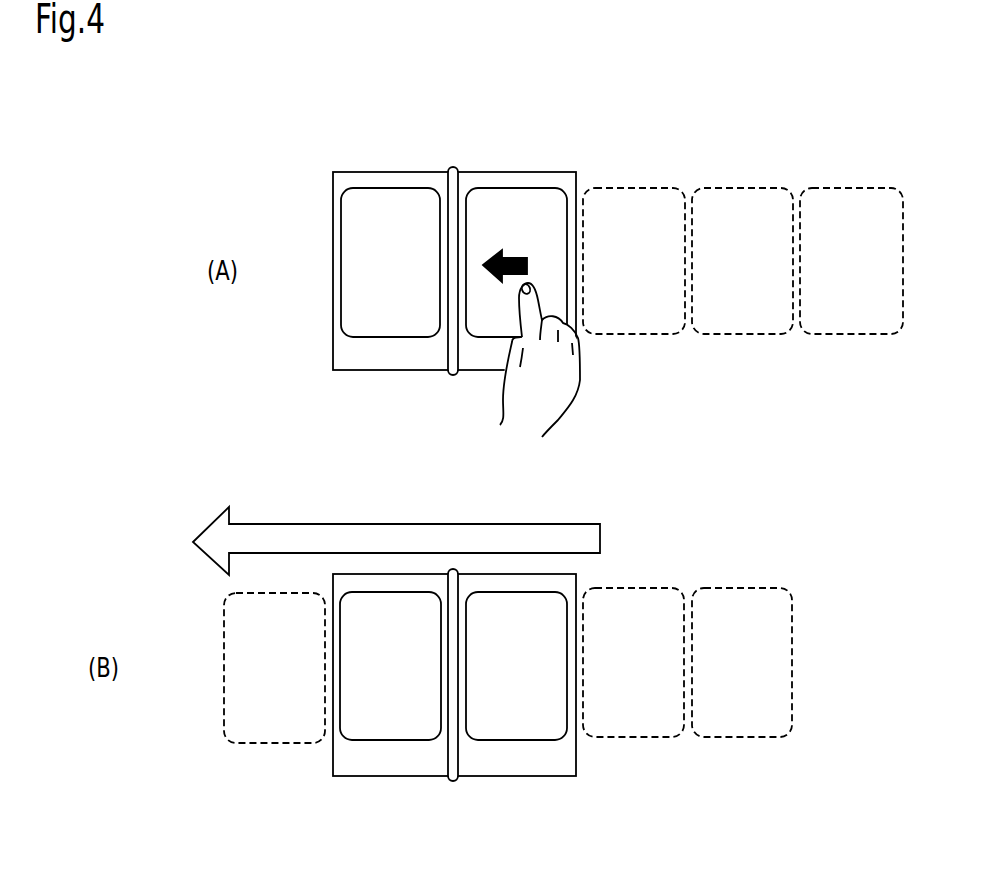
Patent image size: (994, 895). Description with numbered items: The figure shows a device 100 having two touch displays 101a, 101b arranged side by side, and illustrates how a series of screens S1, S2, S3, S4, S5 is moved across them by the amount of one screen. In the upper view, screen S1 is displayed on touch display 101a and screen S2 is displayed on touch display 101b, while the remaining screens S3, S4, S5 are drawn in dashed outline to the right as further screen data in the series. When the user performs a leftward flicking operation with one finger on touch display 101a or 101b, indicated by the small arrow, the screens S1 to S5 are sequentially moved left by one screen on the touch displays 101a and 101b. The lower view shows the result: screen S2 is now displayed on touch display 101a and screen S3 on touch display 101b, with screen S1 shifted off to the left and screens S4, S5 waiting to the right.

The mobile terminal 100 is at (361, 124).
The touch display 101a is at (387, 188).
The touch display 101b is at (507, 188).
The screen S1 is at (353, 202).
The screen S2 is at (540, 195).
The screen S3 is at (642, 188).
The screen S4 is at (753, 188).
The screen S5 is at (863, 188).